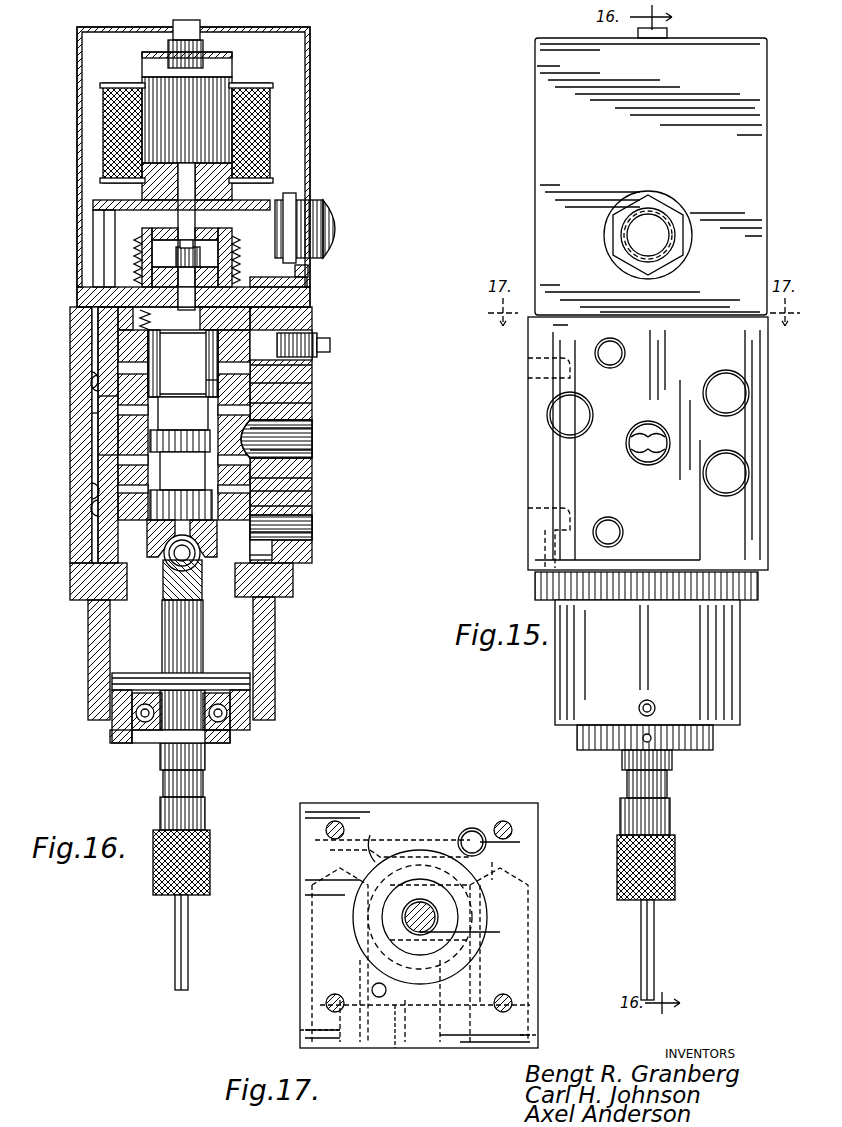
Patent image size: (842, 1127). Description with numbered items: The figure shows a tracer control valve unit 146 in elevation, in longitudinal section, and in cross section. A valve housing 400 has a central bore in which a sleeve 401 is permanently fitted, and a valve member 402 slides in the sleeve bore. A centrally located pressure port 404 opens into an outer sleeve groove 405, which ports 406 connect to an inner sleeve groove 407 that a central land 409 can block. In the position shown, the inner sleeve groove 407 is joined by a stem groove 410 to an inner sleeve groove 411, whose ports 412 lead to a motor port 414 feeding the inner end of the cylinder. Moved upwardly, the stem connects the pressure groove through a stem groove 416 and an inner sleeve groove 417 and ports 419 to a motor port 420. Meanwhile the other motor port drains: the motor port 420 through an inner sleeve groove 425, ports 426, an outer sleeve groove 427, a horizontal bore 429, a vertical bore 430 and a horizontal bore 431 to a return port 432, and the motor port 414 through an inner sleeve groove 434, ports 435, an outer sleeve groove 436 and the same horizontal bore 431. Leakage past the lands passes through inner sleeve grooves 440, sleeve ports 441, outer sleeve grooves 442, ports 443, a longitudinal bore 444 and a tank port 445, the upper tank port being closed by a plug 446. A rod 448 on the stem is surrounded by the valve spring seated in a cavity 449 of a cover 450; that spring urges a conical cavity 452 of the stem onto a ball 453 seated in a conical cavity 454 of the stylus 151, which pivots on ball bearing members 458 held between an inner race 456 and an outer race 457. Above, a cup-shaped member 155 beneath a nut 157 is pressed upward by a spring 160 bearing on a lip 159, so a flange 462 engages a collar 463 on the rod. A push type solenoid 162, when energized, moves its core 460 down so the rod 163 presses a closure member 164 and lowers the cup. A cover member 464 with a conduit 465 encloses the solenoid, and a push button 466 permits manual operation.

In FIG. 16, the cover member 464 is at (78, 52).
In FIG. 15, the cover member 464 is at (612, 128).
In FIG. 16, the push button 466 is at (168, 44).
In FIG. 16, the core 460 is at (215, 86).
In FIG. 16, the push type solenoid 162 is at (294, 97).
In FIG. 16, the rod 163 is at (186, 170).
In FIG. 16, the collar 463 is at (172, 238).
In FIG. 16, the closure member 164 is at (206, 237).
In FIG. 16, the lip 159 is at (222, 232).
In FIG. 16, the cup-shaped member 155 is at (136, 241).
In FIG. 16, the spring 160 is at (234, 246).
In FIG. 16, the flange 462 is at (178, 253).
In FIG. 16, the nut 157 is at (200, 257).
In FIG. 16, the conduit 465 is at (340, 246).
In FIG. 15, the conduit 465 is at (668, 222).
In FIG. 16, the cover 450 is at (80, 296).
In FIG. 16, the valve unit 146 is at (156, 312).
In FIG. 15, the valve unit 146 is at (509, 456).
In FIG. 16, the inner sleeve grooves 440 is at (312, 320).
In FIG. 16, the vertical bore 430 is at (75, 330).
In FIG. 17, the vertical bore 430 is at (472, 828).
In FIG. 16, the valve member 402 is at (120, 356).
In FIG. 17, the valve member 402 is at (395, 930).
In FIG. 16, the rod 448 is at (186, 340).
In FIG. 17, the rod 448 is at (412, 917).
In FIG. 16, the cavity 449 is at (183, 363).
In FIG. 16, the horizontal bore 431 is at (95, 385).
In FIG. 17, the horizontal bore 431 is at (540, 898).
In FIG. 16, the inner sleeve groove 434 is at (226, 380).
In FIG. 16, the plug 446 is at (330, 345).
In FIG. 15, the plug 446 is at (617, 346).
In FIG. 16, the ports 435 is at (312, 368).
In FIG. 16, the outer sleeve groove 436 is at (312, 383).
In FIG. 16, the valve housing 400 is at (312, 392).
In FIG. 15, the valve housing 400 is at (541, 390).
In FIG. 17, the valve housing 400 is at (398, 812).
In FIG. 16, the inner sleeve groove 411 is at (118, 397).
In FIG. 16, the outer sleeve groove 405 is at (312, 403).
In FIG. 16, the ports 412 is at (95, 414).
In FIG. 17, the ports 412 is at (368, 874).
In FIG. 16, the stem groove 410 is at (183, 413).
In FIG. 16, the ports 406 is at (292, 423).
In FIG. 15, the ports 406 is at (658, 434).
In FIG. 17, the ports 406 is at (452, 978).
In FIG. 16, the pressure port 404 is at (292, 437).
In FIG. 15, the pressure port 404 is at (646, 432).
In FIG. 17, the pressure port 404 is at (400, 1048).
In FIG. 16, the central land 409 is at (125, 456).
In FIG. 16, the inner sleeve groove 407 is at (180, 441).
In FIG. 16, the stem groove 416 is at (125, 484).
In FIG. 16, the inner sleeve groove 425 is at (182, 471).
In FIG. 16, the inner sleeve groove 417 is at (312, 478).
In FIG. 16, the ports 426 is at (312, 491).
In FIG. 16, the ports 419 is at (181, 505).
In FIG. 16, the outer sleeve groove 427 is at (312, 506).
In FIG. 16, the horizontal bore 429 is at (125, 512).
In FIG. 17, the horizontal bore 429 is at (430, 830).
In FIG. 16, the sleeve 401 is at (292, 522).
In FIG. 17, the sleeve 401 is at (372, 840).
In FIG. 16, the outer sleeve grooves 442 is at (292, 533).
In FIG. 16, the tank port 445 is at (272, 542).
In FIG. 15, the tank port 445 is at (616, 525).
In FIG. 16, the longitudinal bore 444 is at (272, 556).
In FIG. 16, the ports 443 is at (293, 580).
In FIG. 16, the conical cavity 452 is at (164, 568).
In FIG. 16, the ball 453 is at (168, 580).
In FIG. 16, the conical cavity 454 is at (165, 598).
In FIG. 16, the sleeve ports 441 is at (278, 608).
In FIG. 16, the ball bearing members 458 is at (221, 704).
In FIG. 16, the outer race 457 is at (112, 735).
In FIG. 16, the inner race 456 is at (152, 722).
In FIG. 16, the tracer valve stylus 151 is at (176, 932).
In FIG. 15, the tracer valve stylus 151 is at (654, 922).
In FIG. 15, the return port 432 is at (728, 370).
In FIG. 17, the return port 432 is at (538, 1038).
In FIG. 15, the motor port 414 is at (548, 412).
In FIG. 17, the motor port 414 is at (300, 1033).
In FIG. 15, the motor port 420 is at (752, 472).